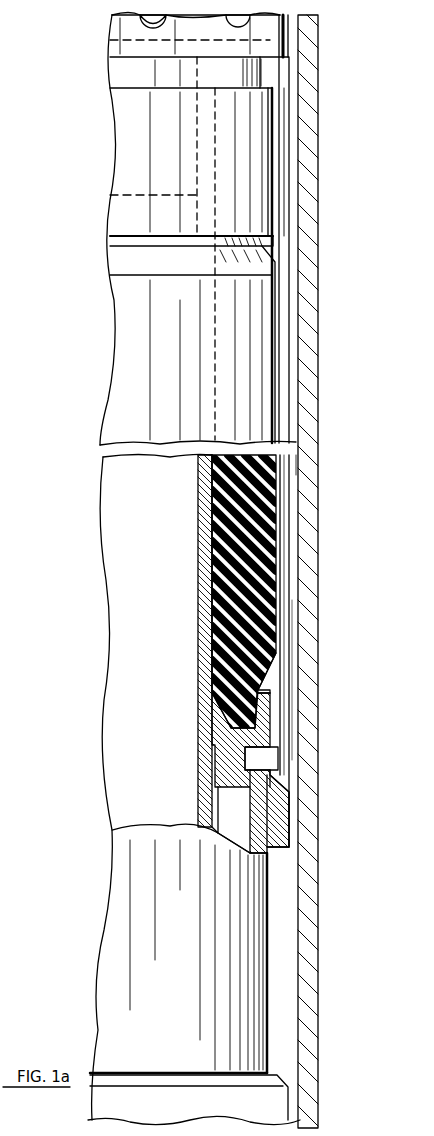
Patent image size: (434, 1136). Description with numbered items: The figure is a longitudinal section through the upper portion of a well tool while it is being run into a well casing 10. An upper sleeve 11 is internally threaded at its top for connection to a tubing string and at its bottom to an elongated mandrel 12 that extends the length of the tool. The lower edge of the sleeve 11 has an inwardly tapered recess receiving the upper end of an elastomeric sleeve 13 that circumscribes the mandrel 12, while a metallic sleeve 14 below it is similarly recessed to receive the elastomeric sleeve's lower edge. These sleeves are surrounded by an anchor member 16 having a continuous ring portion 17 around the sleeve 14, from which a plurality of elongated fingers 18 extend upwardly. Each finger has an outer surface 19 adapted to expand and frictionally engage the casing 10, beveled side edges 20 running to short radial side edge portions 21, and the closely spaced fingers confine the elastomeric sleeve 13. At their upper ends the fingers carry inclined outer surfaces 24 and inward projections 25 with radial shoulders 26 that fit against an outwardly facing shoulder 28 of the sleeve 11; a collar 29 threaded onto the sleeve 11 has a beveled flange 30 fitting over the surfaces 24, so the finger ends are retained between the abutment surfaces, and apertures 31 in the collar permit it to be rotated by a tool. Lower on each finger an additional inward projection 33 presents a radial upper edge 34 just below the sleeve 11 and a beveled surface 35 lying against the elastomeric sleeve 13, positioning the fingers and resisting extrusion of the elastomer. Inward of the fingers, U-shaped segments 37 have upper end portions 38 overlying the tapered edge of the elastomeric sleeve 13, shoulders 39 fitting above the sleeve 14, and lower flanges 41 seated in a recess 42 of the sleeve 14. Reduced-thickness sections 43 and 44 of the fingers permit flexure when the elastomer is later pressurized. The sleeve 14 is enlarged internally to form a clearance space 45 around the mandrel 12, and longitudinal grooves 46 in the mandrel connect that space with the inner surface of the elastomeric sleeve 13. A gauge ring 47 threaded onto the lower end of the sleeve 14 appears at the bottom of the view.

The well casing 10 is at (318, 32).
The sleeve 11 is at (126, 143).
The mandrel 12 is at (203, 515).
The elastomeric sleeve 13 is at (122, 368).
The metallic sleeve 14 is at (268, 915).
The anchor member 16 is at (300, 678).
The ring portion 17 is at (285, 818).
The fingers 18 is at (300, 412).
The outer surface 19 is at (298, 556).
The beveled side edges 20 is at (290, 622).
The side edge portions 21 is at (282, 600).
The inclined outer surfaces 24 is at (286, 62).
The inward projections 25 is at (266, 72).
The radial shoulders 26 is at (262, 95).
The radial outwardly facing shoulder 28 is at (130, 88).
The collar 29 is at (117, 30).
The beveled flange 30 is at (290, 55).
The apertures 31 is at (148, 28).
The inward projection 33 is at (275, 250).
The radial upper edge 34 is at (280, 228).
The beveled surface 35 is at (262, 266).
The segments 37 is at (275, 733).
The upper end portions 38 is at (270, 678).
The shoulders 39 is at (262, 696).
The inwardly extending flanges 41 is at (268, 762).
The recess 42 is at (231, 820).
The section of reduced thickness 43 is at (284, 140).
The section of reduced thickness 44 is at (285, 757).
The clearance space 45 is at (225, 836).
The longitudinal grooves 46 is at (213, 654).
The gauge ring 47 is at (290, 1100).